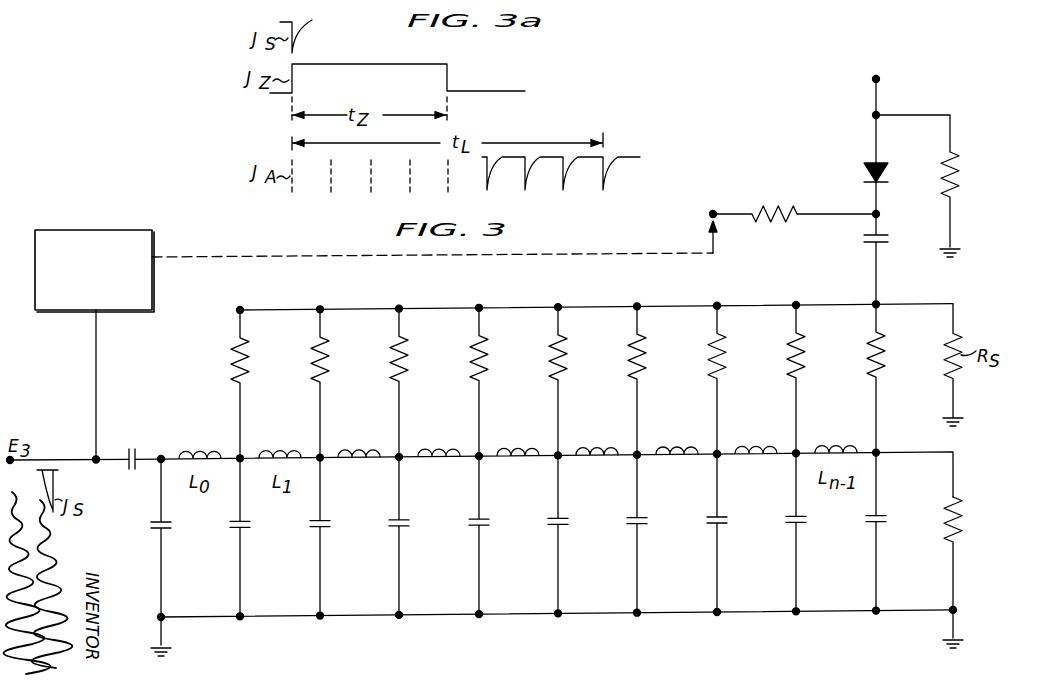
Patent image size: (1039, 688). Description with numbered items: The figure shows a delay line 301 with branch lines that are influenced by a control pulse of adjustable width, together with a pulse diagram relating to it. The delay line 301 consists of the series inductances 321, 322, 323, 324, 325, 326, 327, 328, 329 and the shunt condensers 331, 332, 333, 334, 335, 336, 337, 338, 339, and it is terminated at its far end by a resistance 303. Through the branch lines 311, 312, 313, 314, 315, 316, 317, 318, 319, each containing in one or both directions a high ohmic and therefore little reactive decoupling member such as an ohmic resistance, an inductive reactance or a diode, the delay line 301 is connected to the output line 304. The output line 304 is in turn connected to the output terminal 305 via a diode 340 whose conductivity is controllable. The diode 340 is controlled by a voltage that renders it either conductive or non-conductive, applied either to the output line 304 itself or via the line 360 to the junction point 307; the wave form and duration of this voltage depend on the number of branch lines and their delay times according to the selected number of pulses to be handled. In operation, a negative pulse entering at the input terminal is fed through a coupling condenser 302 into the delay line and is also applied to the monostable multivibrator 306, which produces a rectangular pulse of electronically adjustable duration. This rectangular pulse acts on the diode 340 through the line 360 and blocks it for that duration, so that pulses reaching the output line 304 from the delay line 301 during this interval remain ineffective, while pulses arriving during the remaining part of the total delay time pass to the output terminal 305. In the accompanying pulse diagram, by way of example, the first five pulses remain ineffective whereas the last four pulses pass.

The delay line 301 is at (528, 594).
The coupling capacitor 302 is at (132, 447).
The resistance 303 is at (960, 530).
The output line 304 is at (516, 308).
The output terminal 305 is at (879, 80).
The monostable multivibrator 306 is at (153, 233).
The junction point 307 is at (879, 213).
The branch line 311 is at (218, 384).
The branch line 312 is at (299, 383).
The branch line 313 is at (378, 383).
The branch line 314 is at (458, 382).
The branch line 315 is at (537, 381).
The branch line 316 is at (616, 380).
The branch line 317 is at (696, 380).
The branch line 318 is at (775, 379).
The branch line 319 is at (855, 378).
The inductance 321 is at (200, 436).
The inductance 322 is at (280, 436).
The inductance 323 is at (359, 435).
The inductance 324 is at (439, 434).
The inductance 325 is at (518, 433).
The inductance 326 is at (597, 433).
The inductance 327 is at (677, 432).
The inductance 328 is at (756, 431).
The inductance 329 is at (836, 431).
The condenser 331 is at (180, 538).
The condenser 332 is at (259, 537).
The condenser 333 is at (339, 537).
The condenser 334 is at (418, 536).
The condenser 335 is at (498, 535).
The condenser 336 is at (577, 534).
The condenser 337 is at (656, 534).
The condenser 338 is at (736, 533).
The condenser 339 is at (815, 532).
The diode 340 is at (863, 170).
The line 360 is at (419, 257).